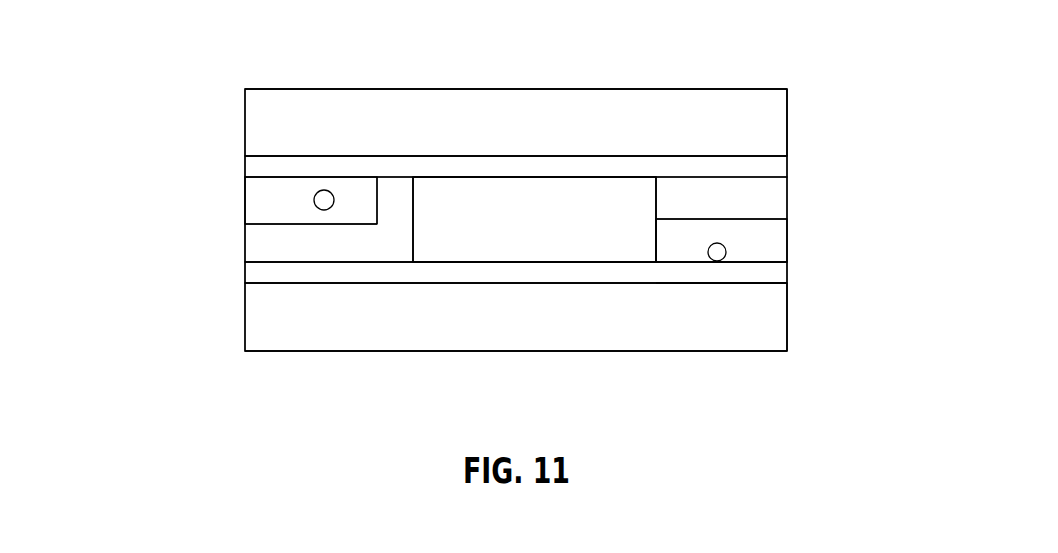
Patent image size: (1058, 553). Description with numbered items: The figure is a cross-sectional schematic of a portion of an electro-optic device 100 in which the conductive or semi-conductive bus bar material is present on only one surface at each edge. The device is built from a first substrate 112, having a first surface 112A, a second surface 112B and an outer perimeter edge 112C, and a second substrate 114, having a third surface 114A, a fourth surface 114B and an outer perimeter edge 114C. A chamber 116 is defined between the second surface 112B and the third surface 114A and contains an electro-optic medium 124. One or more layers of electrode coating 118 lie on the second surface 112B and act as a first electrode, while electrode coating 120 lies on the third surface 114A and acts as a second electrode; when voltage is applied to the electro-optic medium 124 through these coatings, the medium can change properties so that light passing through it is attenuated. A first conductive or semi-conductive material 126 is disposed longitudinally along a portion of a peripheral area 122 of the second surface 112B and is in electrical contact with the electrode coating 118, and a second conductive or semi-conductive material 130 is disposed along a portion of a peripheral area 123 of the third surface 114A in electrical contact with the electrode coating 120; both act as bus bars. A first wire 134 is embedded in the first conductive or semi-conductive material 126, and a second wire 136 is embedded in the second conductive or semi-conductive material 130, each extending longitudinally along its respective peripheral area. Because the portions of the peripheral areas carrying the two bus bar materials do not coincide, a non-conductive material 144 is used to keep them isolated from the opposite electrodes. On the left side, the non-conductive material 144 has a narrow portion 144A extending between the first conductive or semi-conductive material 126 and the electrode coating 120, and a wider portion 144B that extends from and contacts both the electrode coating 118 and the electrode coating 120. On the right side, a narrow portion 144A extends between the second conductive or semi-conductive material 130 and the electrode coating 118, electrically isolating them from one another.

The electro-optic device 100 is at (170, 74).
The first substrate 112 is at (245, 98).
The first surface 112A is at (418, 88).
The second surface 112B is at (455, 155).
The outer perimeter edge 112C is at (787, 106).
The second substrate 114 is at (257, 318).
The third surface 114A is at (480, 285).
The fourth surface 114B is at (580, 351).
The outer perimeter edge 114C is at (787, 315).
The chamber 116 is at (515, 202).
The electrode coating 118 is at (255, 163).
The electrode coating 120 is at (257, 275).
The peripheral area 122 is at (727, 153).
The peripheral area 123 is at (723, 285).
The electro-optic medium 124 is at (572, 205).
The first conductive or semi-conductive material 126 is at (255, 200).
The second conductive or semi-conductive material 130 is at (779, 245).
The first wire 134 is at (327, 190).
The second wire 136 is at (711, 260).
The non-conductive material 144 is at (779, 203).
The narrow portion 144A is at (257, 240).
The wider portion 144B is at (395, 198).